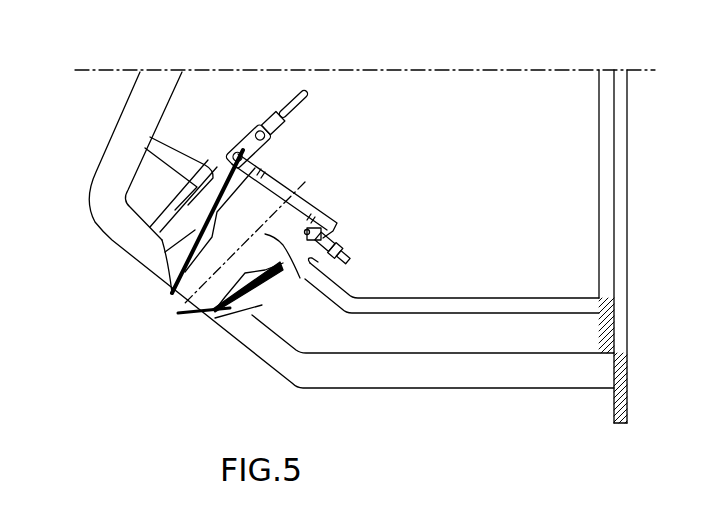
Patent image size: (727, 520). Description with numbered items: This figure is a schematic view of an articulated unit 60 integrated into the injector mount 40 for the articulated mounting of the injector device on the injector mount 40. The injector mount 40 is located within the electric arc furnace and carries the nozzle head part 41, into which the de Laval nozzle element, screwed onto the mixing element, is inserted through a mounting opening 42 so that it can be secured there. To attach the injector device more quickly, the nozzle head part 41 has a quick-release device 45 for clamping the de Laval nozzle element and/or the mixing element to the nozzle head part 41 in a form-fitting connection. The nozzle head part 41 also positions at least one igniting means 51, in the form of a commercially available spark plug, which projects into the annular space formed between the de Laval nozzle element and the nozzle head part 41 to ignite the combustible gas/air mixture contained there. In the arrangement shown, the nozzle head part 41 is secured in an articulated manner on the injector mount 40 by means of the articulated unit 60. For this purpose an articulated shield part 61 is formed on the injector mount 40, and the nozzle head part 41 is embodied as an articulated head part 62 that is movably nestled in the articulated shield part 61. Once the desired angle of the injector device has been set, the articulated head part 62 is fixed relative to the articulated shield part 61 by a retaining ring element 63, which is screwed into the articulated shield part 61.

The injector mount 40 is at (548, 93).
The nozzle head part 41 is at (210, 242).
The mounting opening 42 is at (292, 210).
The quick-release device 45 is at (267, 113).
The igniting means 51 is at (352, 262).
The articulated unit 60 is at (155, 305).
The articulated shield part 61 is at (245, 330).
The articulated head part 62 is at (208, 318).
The retaining ring element 63 is at (204, 167).